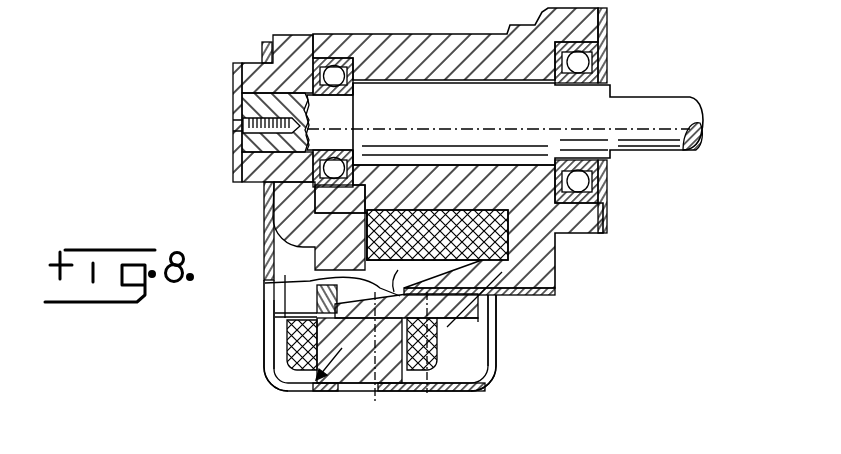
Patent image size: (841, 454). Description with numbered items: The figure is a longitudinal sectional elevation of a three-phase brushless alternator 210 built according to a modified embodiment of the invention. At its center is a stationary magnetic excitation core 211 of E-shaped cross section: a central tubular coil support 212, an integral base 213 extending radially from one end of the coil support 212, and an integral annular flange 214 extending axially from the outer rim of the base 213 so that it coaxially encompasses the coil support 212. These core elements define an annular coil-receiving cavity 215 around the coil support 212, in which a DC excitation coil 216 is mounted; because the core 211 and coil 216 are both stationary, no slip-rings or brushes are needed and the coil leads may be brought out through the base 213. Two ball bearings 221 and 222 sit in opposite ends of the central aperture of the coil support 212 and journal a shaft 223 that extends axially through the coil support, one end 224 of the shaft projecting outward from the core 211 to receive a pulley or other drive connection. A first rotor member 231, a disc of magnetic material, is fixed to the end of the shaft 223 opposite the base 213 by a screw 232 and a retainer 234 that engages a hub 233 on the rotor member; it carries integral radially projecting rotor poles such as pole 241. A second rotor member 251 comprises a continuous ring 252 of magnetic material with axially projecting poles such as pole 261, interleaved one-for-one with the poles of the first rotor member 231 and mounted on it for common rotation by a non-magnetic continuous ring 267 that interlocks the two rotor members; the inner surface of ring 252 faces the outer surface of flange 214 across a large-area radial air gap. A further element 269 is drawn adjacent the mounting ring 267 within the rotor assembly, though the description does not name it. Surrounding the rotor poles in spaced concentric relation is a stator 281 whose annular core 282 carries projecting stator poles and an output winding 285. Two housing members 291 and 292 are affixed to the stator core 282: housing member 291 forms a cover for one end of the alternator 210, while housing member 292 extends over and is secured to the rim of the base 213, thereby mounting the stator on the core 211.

The alternator 210 is at (244, 354).
The stationary magnetic excitation core 211 is at (586, 24).
The central tubular coil support 212 is at (461, 45).
The base 213 is at (556, 275).
The annular flange 214 is at (497, 315).
The annular coil-receiving cavity 215 is at (497, 362).
The DC excitation coil 216 is at (528, 298).
The ball bearing 221 is at (606, 193).
The ball bearing 222 is at (305, 216).
The shaft 223 is at (556, 242).
The outboard end of shaft 224 is at (678, 146).
The first rotor member 231 is at (280, 226).
The screw 232 is at (241, 129).
The hub 233 is at (255, 76).
The retainer 234 is at (236, 166).
The rotor pole 241 is at (398, 358).
The second rotor member 251 is at (427, 393).
The continuous ring of magnetic material 252 is at (443, 320).
The rotor pole 261 is at (270, 372).
The continuous ring 267 is at (283, 316).
The retainer 269 is at (318, 298).
The stator 281 is at (310, 390).
The annular stator core 282 is at (367, 392).
The output winding 285 is at (287, 324).
The housing member 291 is at (268, 262).
The housing member 292 is at (487, 392).